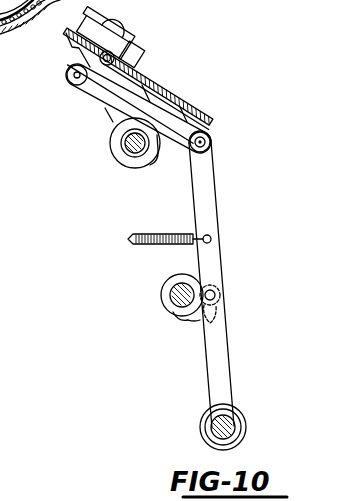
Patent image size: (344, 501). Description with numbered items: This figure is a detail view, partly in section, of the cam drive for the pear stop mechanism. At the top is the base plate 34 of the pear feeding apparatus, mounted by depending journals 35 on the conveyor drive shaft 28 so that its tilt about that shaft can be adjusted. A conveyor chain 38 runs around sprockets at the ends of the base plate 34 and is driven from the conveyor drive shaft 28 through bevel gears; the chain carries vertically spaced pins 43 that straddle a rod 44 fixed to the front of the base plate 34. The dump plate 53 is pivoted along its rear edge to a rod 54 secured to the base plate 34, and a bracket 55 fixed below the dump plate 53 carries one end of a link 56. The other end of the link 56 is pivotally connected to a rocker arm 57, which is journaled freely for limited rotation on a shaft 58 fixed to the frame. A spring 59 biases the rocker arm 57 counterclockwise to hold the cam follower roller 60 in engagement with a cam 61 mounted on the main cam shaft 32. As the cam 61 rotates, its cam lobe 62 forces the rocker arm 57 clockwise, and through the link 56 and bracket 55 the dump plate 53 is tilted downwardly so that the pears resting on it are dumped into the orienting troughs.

The conveyor drive shaft 28 is at (130, 145).
The main cam shaft 32 is at (175, 289).
The base plate 34 is at (198, 105).
The depending journals 35 is at (151, 164).
The conveyor chain 38 is at (141, 57).
The pins 43 is at (130, 27).
The rod 44 is at (138, 44).
The dump plate 53 is at (67, 30).
The rod 54 is at (97, 80).
The bracket 55 is at (77, 50).
The link 56 is at (117, 103).
The rocker arm 57 is at (213, 221).
The shaft 58 is at (218, 425).
The spring 59 is at (172, 232).
The cam follower roller 60 is at (221, 296).
The cam 61 is at (175, 314).
The cam lobe 62 is at (198, 320).